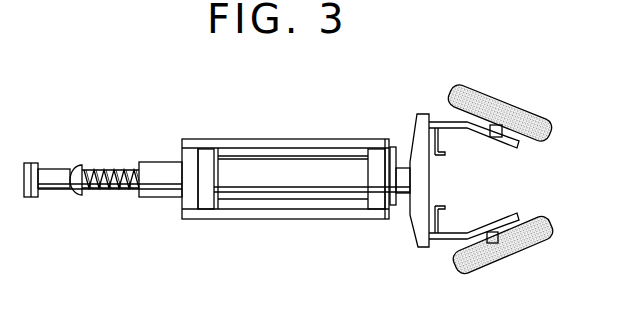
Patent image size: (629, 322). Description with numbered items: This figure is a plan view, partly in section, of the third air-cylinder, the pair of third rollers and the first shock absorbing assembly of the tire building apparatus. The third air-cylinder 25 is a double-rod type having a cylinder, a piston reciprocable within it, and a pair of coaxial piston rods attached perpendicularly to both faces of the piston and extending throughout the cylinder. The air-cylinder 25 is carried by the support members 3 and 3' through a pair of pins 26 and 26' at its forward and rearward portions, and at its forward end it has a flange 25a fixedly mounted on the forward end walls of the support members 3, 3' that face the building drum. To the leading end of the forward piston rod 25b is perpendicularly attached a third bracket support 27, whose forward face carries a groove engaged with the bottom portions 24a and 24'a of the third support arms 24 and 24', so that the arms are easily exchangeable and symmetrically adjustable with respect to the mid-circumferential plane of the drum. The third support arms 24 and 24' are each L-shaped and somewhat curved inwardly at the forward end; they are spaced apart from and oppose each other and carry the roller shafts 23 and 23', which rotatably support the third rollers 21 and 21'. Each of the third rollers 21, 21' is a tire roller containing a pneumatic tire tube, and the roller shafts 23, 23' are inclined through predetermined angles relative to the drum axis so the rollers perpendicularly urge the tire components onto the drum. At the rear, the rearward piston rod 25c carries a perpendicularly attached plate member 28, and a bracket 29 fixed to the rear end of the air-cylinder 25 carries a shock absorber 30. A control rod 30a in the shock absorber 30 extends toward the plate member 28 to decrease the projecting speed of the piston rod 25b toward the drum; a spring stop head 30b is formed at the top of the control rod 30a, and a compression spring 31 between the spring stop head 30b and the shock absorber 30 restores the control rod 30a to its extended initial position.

The plate member 28 is at (30, 163).
The piston rod 25c is at (58, 173).
The compression spring 31 is at (110, 192).
The spring stop head 30b is at (76, 193).
The control rod 30a is at (113, 172).
The shock absorber 30 is at (163, 170).
The support member 3 is at (285, 199).
The bracket 29 is at (189, 200).
The pin 26 is at (216, 154).
The support member 3' is at (293, 154).
The third air-cylinder 25 is at (282, 198).
The pin 26' is at (358, 154).
The flange 25a is at (394, 146).
The piston rod 25b is at (398, 205).
The third bracket support 27 is at (421, 113).
The third support arm 24' is at (474, 103).
The bottom portion 24'a is at (467, 164).
The third support arm 24 is at (468, 244).
The bottom portion 24a is at (440, 208).
The roller shaft 23' is at (504, 100).
The third roller 21' is at (503, 113).
The roller shaft 23 is at (501, 267).
The third roller 21 is at (503, 248).